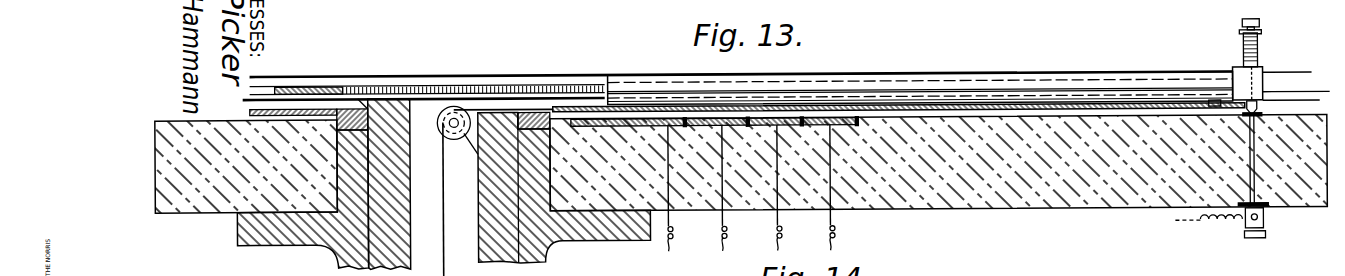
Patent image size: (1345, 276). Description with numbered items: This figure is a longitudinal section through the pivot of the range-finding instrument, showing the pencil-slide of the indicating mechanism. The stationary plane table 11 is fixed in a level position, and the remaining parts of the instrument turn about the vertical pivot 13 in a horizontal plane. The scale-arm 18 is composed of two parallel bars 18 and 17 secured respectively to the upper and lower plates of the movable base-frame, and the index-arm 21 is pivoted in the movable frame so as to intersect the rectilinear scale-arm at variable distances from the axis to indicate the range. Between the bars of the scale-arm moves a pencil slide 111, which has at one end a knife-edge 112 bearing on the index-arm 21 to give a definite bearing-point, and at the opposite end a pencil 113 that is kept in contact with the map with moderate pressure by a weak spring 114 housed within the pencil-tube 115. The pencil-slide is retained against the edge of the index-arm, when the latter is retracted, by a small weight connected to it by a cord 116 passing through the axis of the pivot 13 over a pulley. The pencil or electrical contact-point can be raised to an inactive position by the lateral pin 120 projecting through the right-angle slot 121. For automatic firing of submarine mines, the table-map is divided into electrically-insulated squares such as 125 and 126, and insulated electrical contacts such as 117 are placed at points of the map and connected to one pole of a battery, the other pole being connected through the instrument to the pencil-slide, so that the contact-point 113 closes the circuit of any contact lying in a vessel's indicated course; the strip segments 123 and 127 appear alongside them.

The stationary plane table 11 is at (741, 163).
The vertical pivot 13 is at (389, 184).
The parallel bar of scale-arm 17 is at (792, 101).
The scale-arm 18 is at (500, 76).
The index-arm 21 is at (443, 84).
The pencil slide 111 is at (1018, 66).
The knife-edge 112 is at (607, 81).
The pencil 113 is at (1258, 112).
The weak spring 114 is at (1260, 48).
The pencil-tube 115 is at (1245, 36).
The cord 116 is at (444, 190).
The insulated electrical contact 117 is at (1258, 168).
The lateral pin 120 is at (1243, 64).
The right-angle slot 121 is at (1243, 48).
The contact strip 123 is at (668, 126).
The electrically-insulated square 125 is at (830, 126).
The electrically-insulated square 126 is at (777, 126).
The contact strip 127 is at (722, 126).